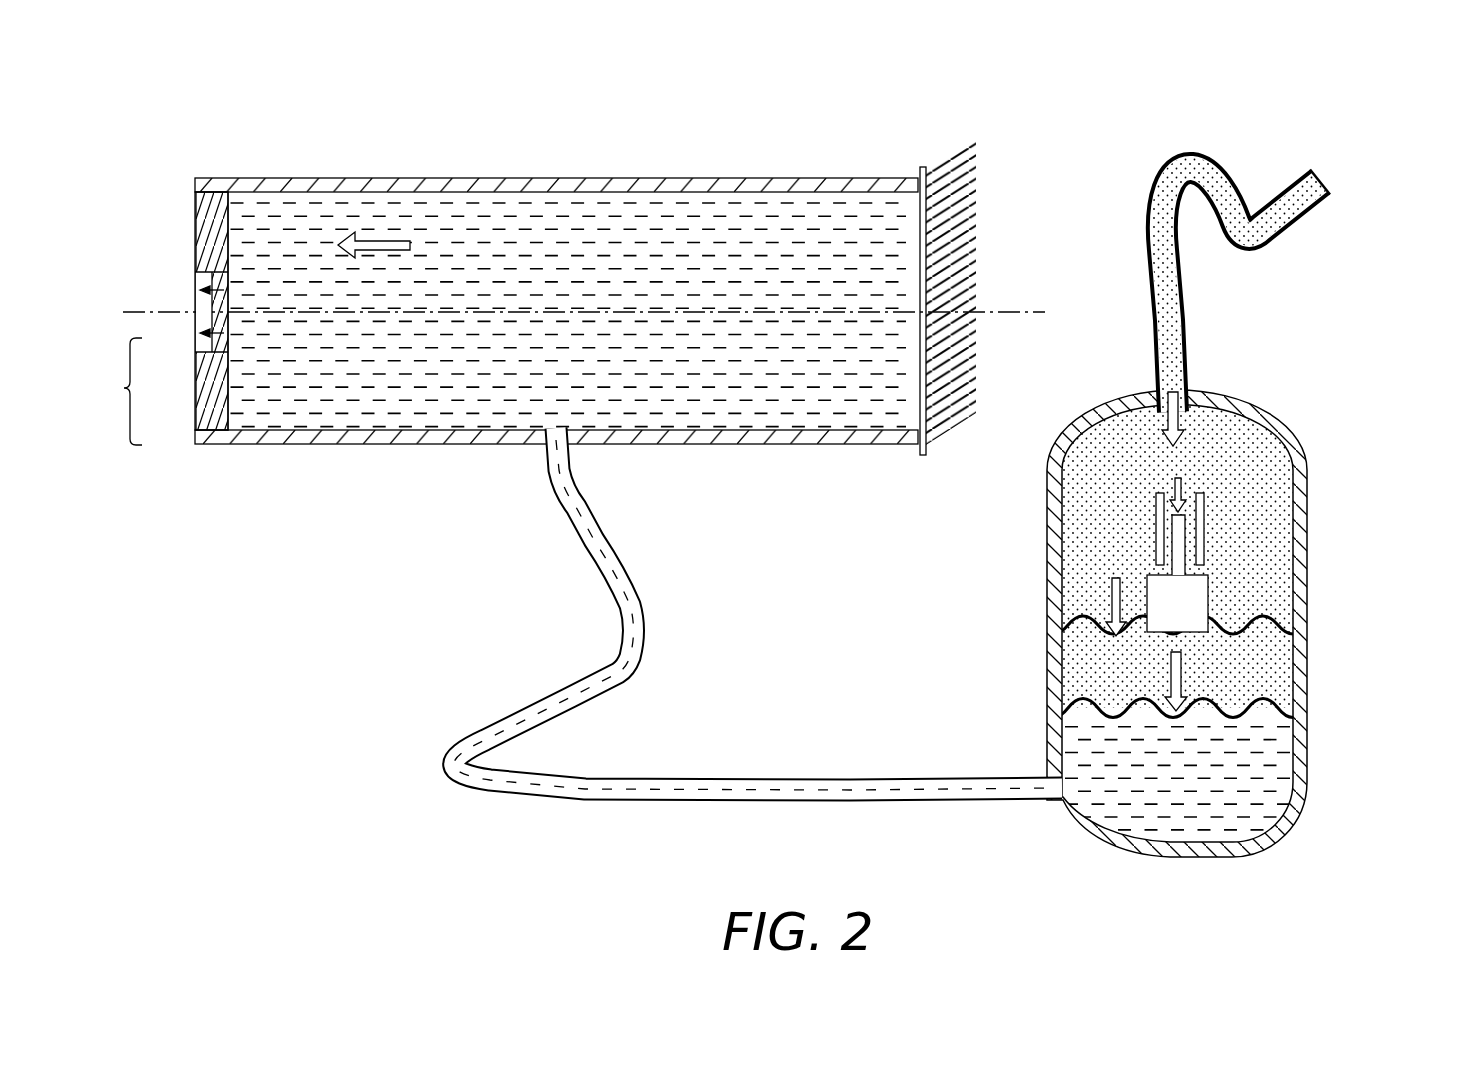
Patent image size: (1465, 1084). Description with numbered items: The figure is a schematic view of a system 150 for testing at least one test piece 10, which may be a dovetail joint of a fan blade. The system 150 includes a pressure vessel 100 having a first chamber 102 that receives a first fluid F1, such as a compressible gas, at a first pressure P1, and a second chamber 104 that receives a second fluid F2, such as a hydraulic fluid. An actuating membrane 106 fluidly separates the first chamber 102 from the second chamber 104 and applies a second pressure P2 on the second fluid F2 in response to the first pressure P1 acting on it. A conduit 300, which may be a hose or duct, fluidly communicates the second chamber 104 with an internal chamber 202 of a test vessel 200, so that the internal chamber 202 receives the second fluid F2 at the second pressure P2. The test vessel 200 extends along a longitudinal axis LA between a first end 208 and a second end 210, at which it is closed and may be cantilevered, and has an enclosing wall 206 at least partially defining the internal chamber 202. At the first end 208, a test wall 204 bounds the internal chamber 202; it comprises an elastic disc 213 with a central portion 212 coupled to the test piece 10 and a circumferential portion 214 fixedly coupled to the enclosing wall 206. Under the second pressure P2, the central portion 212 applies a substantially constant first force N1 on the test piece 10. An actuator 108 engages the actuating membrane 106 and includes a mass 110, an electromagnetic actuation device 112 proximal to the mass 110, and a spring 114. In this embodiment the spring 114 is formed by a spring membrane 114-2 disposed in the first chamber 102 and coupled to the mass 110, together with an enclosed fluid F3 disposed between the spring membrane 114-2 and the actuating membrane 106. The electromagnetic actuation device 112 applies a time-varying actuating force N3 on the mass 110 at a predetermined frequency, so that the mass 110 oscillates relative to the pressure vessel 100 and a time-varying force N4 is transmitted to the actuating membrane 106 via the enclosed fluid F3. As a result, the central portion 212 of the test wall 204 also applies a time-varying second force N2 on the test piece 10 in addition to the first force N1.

The test piece 10 is at (157, 303).
The pressure vessel 100 is at (954, 457).
The first chamber 102 is at (1159, 488).
The second chamber 104 is at (1108, 802).
The actuating membrane 106 is at (1073, 690).
The actuator 108 is at (1213, 578).
The mass 110 is at (1210, 578).
The electromagnetic actuation device 112 is at (1205, 527).
The spring 114 is at (1202, 660).
The spring membrane 114-2 is at (1296, 626).
The system 150 is at (1328, 72).
The test vessel 200 is at (726, 431).
The internal chamber 202 is at (801, 461).
The test wall 204 is at (155, 270).
The enclosing wall 206 is at (334, 447).
The first end 208 is at (205, 468).
The second end 210 is at (933, 146).
The central portion 212 is at (200, 345).
The elastic disc 213 is at (112, 391).
The circumferential portion 214 is at (200, 428).
The conduit 300 is at (522, 803).
The first force N1 is at (198, 275).
The second force N2 is at (197, 331).
The time-varying actuating force N3 is at (1190, 490).
The time-varying force N4 is at (1170, 665).
The first pressure P1 is at (1200, 405).
The second pressure P2 is at (383, 238).
The first fluid F1 is at (1108, 428).
The second fluid F2 is at (557, 222).
The enclosed fluid F3 is at (1174, 675).
The longitudinal axis LA is at (1026, 306).